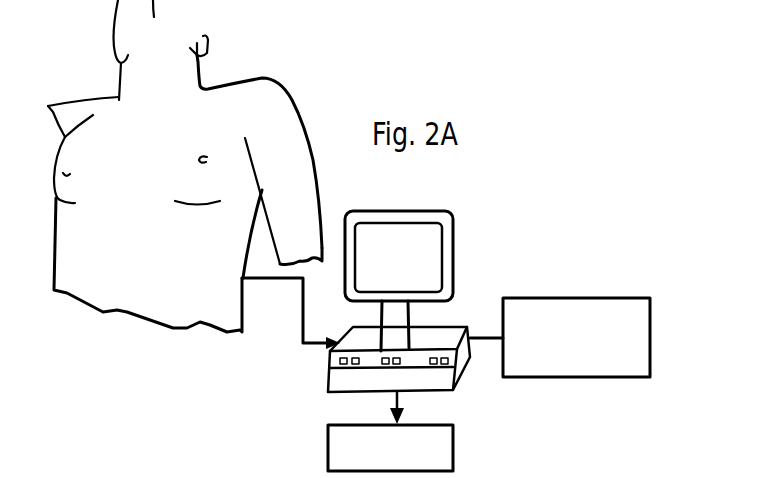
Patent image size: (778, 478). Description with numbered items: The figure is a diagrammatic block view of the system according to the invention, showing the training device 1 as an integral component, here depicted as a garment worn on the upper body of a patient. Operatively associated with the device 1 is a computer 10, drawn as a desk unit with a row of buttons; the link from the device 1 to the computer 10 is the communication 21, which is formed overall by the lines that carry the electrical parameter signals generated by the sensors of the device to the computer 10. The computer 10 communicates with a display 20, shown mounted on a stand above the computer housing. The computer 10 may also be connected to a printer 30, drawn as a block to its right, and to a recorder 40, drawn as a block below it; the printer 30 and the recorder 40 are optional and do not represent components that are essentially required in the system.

The training device 1 is at (40, 240).
The computer 10 is at (337, 383).
The display 20 is at (437, 233).
The communication 21 is at (305, 315).
The printer 30 is at (569, 308).
The recorder 40 is at (440, 445).